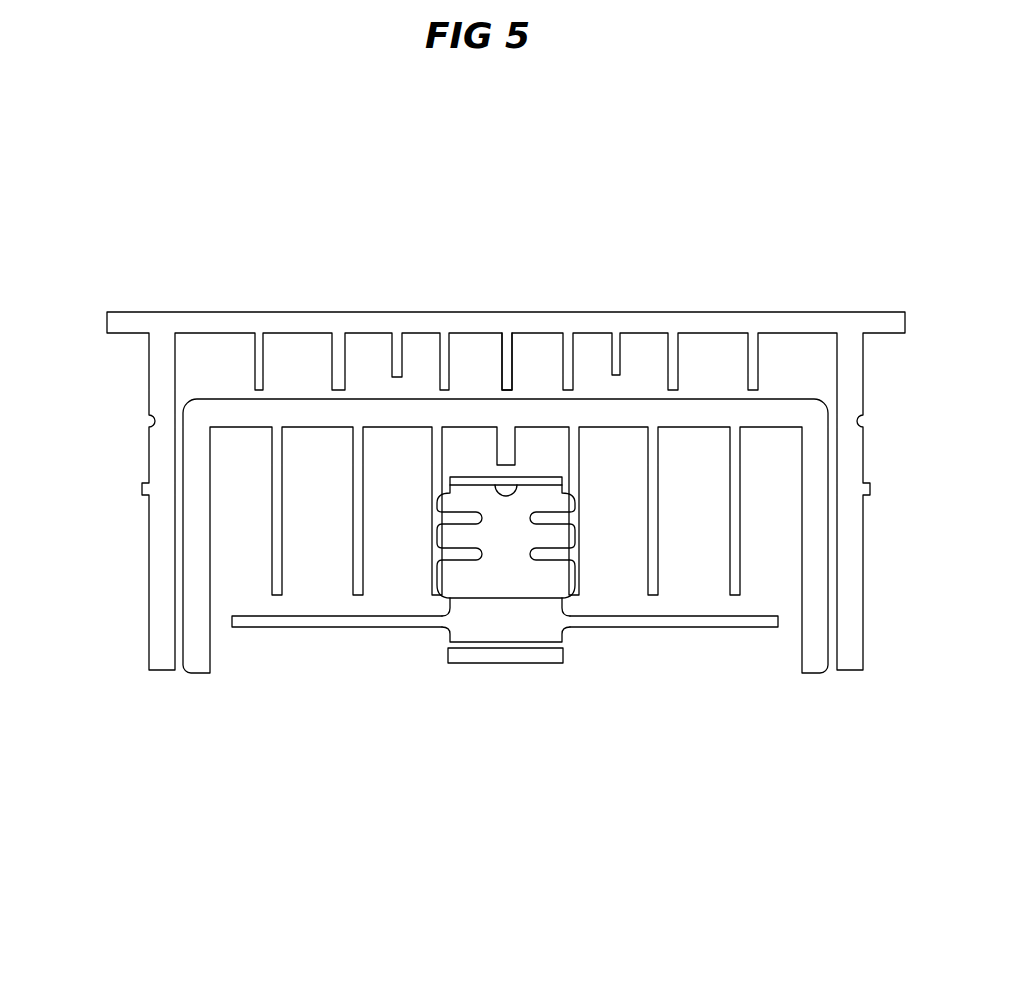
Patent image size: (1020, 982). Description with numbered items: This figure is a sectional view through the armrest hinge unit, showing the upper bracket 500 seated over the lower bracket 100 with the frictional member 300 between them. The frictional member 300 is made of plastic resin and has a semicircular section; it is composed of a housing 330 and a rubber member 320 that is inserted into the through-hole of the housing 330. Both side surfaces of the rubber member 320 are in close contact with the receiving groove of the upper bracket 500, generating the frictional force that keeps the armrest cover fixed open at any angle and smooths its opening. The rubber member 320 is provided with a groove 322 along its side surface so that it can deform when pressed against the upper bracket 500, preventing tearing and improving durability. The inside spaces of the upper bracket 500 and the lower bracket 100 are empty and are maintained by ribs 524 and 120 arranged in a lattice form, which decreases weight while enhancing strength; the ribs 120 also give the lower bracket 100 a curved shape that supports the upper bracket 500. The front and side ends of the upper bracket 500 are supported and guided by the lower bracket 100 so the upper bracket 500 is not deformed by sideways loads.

The lower bracket 100 is at (462, 322).
The rib 120 is at (507, 372).
The frictional member 300 is at (491, 658).
The rubber member 320 is at (569, 638).
The groove 322 is at (545, 560).
The housing 330 is at (437, 713).
The upper bracket 500 is at (190, 567).
The rib 524 is at (277, 588).